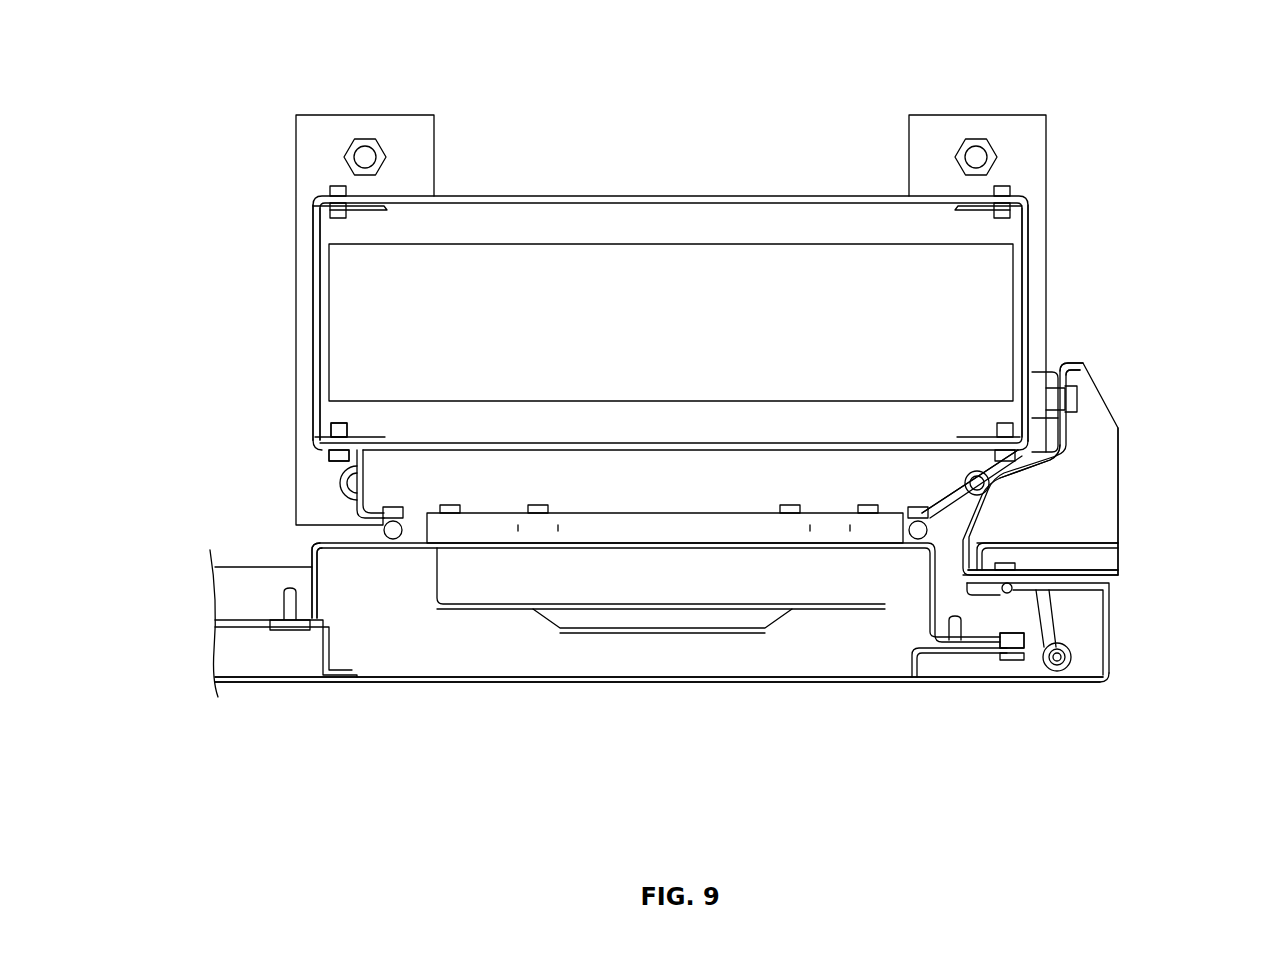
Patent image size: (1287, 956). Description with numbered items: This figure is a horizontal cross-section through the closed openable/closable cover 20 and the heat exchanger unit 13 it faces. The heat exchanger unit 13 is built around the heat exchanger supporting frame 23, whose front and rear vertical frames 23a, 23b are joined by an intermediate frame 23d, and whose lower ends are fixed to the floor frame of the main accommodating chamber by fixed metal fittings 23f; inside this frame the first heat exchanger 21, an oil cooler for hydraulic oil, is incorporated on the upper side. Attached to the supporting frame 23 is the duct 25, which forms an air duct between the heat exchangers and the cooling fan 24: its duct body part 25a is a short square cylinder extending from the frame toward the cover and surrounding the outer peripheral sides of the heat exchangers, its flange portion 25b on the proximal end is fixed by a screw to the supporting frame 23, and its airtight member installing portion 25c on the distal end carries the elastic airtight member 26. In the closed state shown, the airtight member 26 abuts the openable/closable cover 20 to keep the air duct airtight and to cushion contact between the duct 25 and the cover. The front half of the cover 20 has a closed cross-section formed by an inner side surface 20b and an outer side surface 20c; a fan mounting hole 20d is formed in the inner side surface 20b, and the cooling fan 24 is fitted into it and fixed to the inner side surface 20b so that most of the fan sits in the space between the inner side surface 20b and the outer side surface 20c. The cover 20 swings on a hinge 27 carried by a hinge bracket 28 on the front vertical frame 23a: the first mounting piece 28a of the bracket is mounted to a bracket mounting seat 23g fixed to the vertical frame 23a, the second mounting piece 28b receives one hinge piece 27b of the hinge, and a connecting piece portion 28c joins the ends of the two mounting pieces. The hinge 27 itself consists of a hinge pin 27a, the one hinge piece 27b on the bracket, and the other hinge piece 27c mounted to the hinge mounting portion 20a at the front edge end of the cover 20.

The heat exchanger unit 13 is at (614, 158).
The openable/closable cover 20 is at (760, 690).
The hinge mounting portion 20a is at (992, 652).
The inner side surface 20b is at (375, 548).
The outer side surface 20c is at (558, 684).
The fan mounting hole 20d is at (452, 548).
The first heat exchanger 21 is at (702, 268).
The heat exchanger supporting frame 23 is at (784, 182).
The vertical frame 23a is at (1030, 302).
The vertical frame 23b is at (308, 289).
The intermediate frame 23d is at (523, 447).
The fixed metal fitting 23f is at (312, 140).
The bracket mounting seat 23g is at (1042, 358).
The cooling fan 24 is at (670, 585).
The duct 25 is at (850, 475).
The duct body part 25a is at (345, 482).
The flange portion 25b is at (315, 446).
The airtight member installing portion 25c is at (388, 517).
The airtight member 26 is at (905, 548).
The hinge 27 is at (1075, 623).
The hinge pin 27a is at (1062, 669).
The one hinge piece 27b is at (1015, 591).
The other hinge piece 27c is at (1005, 652).
The hinge bracket 28 is at (1085, 447).
The first mounting piece 28a is at (1085, 367).
The second mounting piece 28b is at (1120, 544).
The connecting piece portion 28c is at (1075, 500).